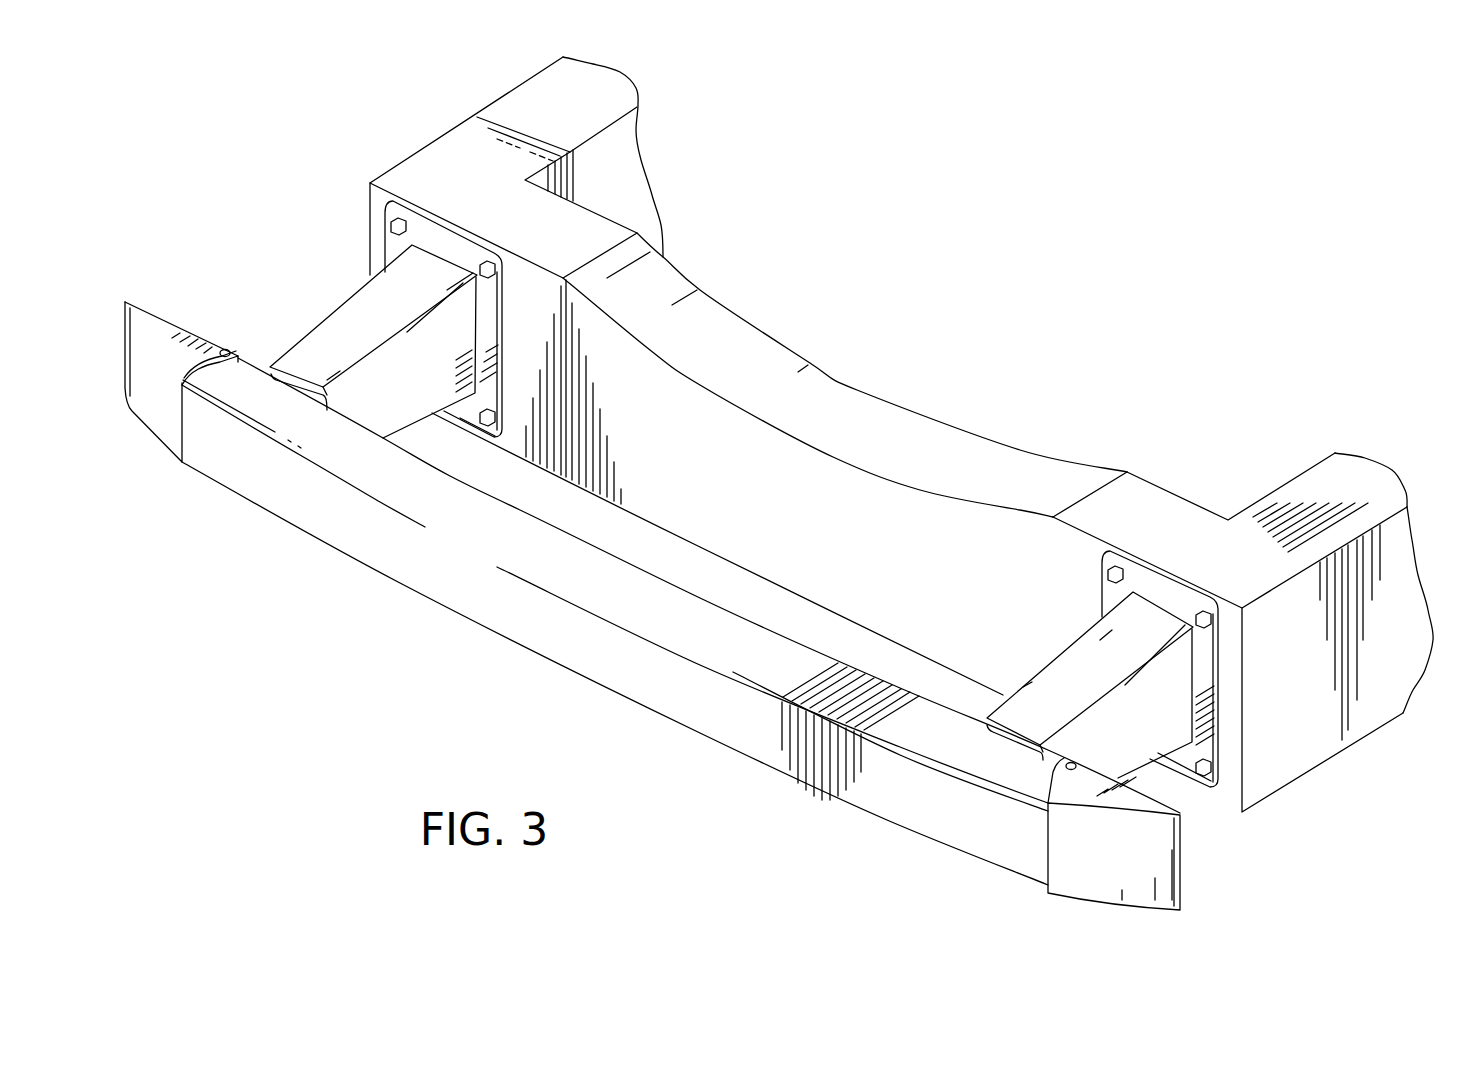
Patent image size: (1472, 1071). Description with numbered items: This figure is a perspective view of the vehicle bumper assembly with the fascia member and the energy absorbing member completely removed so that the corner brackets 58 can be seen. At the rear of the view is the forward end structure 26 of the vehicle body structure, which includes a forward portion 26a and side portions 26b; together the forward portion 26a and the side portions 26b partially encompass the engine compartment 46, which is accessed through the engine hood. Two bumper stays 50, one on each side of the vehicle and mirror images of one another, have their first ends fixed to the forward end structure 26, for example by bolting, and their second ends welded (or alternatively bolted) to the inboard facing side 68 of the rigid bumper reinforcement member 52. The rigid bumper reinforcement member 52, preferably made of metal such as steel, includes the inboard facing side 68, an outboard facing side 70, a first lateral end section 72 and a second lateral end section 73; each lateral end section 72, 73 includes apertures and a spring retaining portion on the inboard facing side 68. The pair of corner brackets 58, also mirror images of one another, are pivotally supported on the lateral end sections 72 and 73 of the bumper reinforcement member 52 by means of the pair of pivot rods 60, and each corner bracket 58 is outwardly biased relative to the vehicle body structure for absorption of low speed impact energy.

The forward end structure 26 is at (1167, 525).
The forward portion 26a is at (843, 417).
The side portions 26b is at (548, 100).
The engine compartment 46 is at (839, 338).
The bumper stays 50 is at (370, 317).
The rigid bumper reinforcement member 52 is at (681, 634).
The corner brackets 58 is at (160, 410).
The pivot rods 60 is at (226, 347).
The inboard facing side 68 is at (646, 570).
The outboard facing side 70 is at (752, 722).
The first lateral end section 72 is at (1037, 783).
The second lateral end section 73 is at (213, 386).